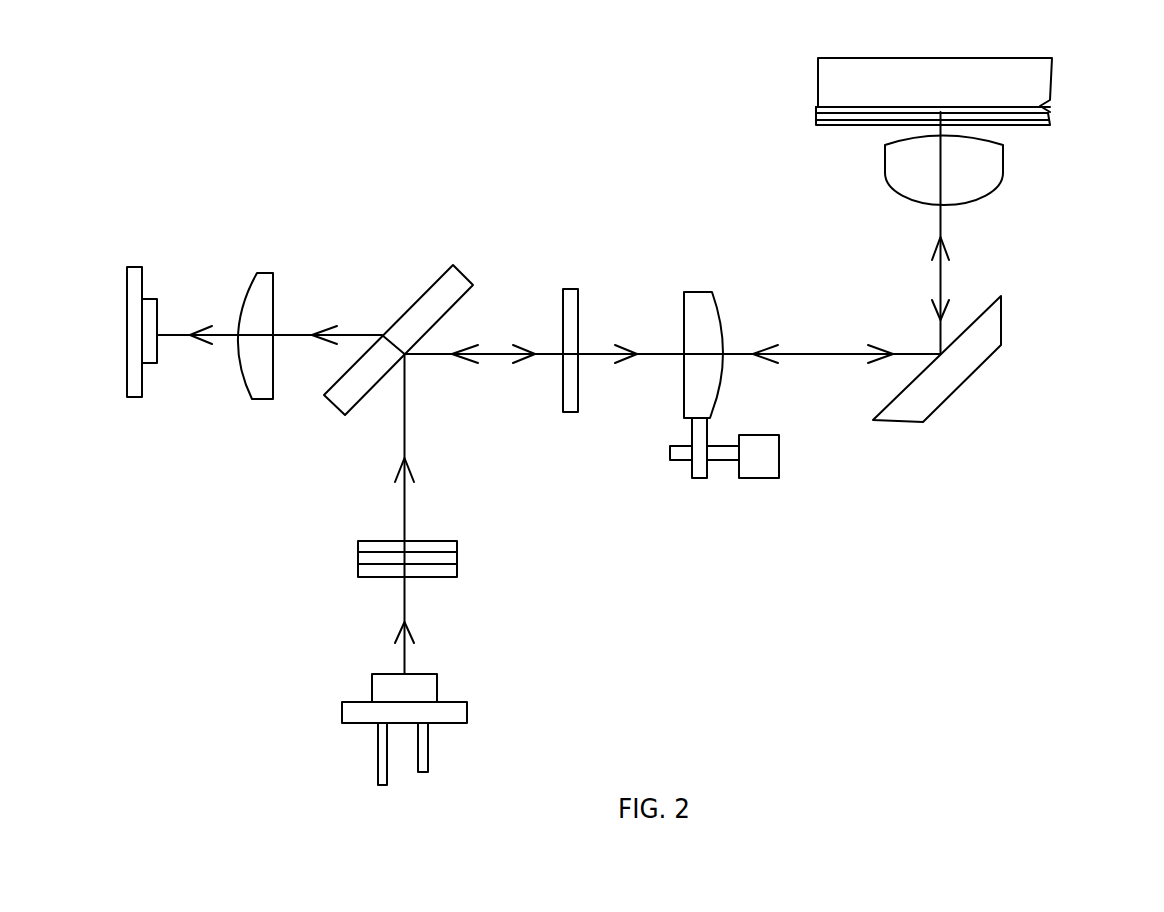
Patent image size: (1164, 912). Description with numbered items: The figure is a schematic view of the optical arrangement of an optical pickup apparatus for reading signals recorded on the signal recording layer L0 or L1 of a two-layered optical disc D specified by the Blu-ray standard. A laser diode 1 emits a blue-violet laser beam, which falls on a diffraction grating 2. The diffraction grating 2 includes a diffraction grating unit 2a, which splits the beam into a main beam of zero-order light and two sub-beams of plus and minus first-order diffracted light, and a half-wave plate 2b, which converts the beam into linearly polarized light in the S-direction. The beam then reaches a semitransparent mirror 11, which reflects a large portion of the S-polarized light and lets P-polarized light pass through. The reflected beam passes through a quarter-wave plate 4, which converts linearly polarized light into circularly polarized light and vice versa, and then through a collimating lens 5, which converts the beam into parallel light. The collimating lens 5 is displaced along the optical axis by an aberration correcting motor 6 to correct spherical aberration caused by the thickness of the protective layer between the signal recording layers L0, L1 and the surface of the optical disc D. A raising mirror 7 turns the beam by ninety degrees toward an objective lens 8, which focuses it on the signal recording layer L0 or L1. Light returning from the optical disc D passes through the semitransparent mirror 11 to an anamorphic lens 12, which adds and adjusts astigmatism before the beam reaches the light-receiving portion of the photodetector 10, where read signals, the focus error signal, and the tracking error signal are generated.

The laser diode 1 is at (458, 718).
The diffraction grating 2 is at (347, 560).
The diffraction grating unit 2a is at (457, 558).
The half-wave plate 2b is at (457, 548).
The quarter-wave plate 4 is at (567, 402).
The collimating lens 5 is at (697, 302).
The aberration correcting motor 6 is at (760, 468).
The raising mirror 7 is at (955, 370).
The objective lens 8 is at (980, 175).
The photodetector 10 is at (132, 388).
The semitransparent mirror 11 is at (442, 288).
The anamorphic lens 12 is at (263, 283).
The optical disc D is at (830, 78).
The signal recording layer L1 is at (1033, 110).
The signal recording layer L0 is at (1045, 125).